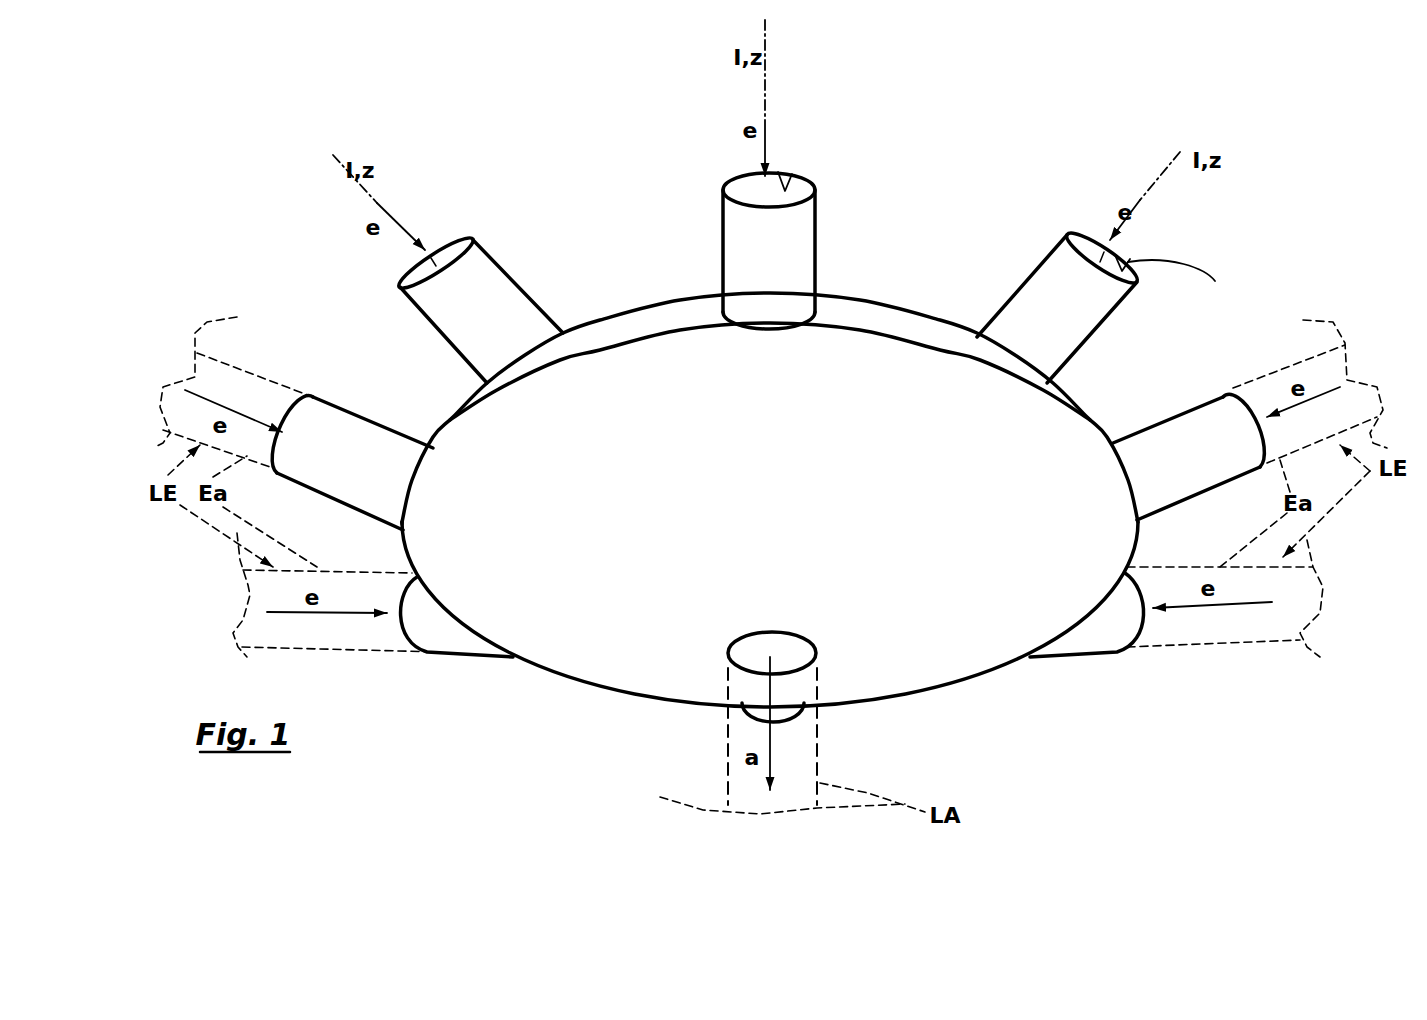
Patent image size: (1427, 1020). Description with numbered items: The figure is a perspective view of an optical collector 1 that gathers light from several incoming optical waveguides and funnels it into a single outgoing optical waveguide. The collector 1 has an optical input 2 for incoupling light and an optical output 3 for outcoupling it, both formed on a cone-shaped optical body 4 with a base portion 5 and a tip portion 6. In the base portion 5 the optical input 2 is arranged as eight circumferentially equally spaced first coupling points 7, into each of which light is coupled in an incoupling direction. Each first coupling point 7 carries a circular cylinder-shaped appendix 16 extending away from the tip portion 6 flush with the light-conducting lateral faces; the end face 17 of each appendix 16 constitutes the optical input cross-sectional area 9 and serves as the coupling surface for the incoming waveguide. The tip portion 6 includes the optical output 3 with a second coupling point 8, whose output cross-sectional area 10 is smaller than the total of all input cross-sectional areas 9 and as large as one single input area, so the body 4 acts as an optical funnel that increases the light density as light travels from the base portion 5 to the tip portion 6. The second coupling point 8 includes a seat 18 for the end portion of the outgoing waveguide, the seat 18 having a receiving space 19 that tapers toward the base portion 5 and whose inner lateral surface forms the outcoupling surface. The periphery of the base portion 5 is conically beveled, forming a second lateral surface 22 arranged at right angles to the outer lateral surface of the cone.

The optical collector 1 is at (232, 165).
The optical input 2 is at (1197, 220).
The optical output 3 is at (748, 684).
The cone-shaped optical body 4 is at (257, 257).
The base portion 5 is at (585, 318).
The tip portion 6 is at (620, 683).
The first coupling points 7 is at (488, 253).
The second coupling point 8 is at (695, 684).
The optical input cross-sectional area 9 is at (789, 178).
The output cross-sectional area 10 is at (786, 656).
The cylinder-shaped appendix 16 is at (459, 330).
The face of appendix 17 is at (1240, 402).
The seat 18 is at (787, 662).
The receiving space 19 is at (760, 653).
The second lateral surface 22 is at (870, 323).